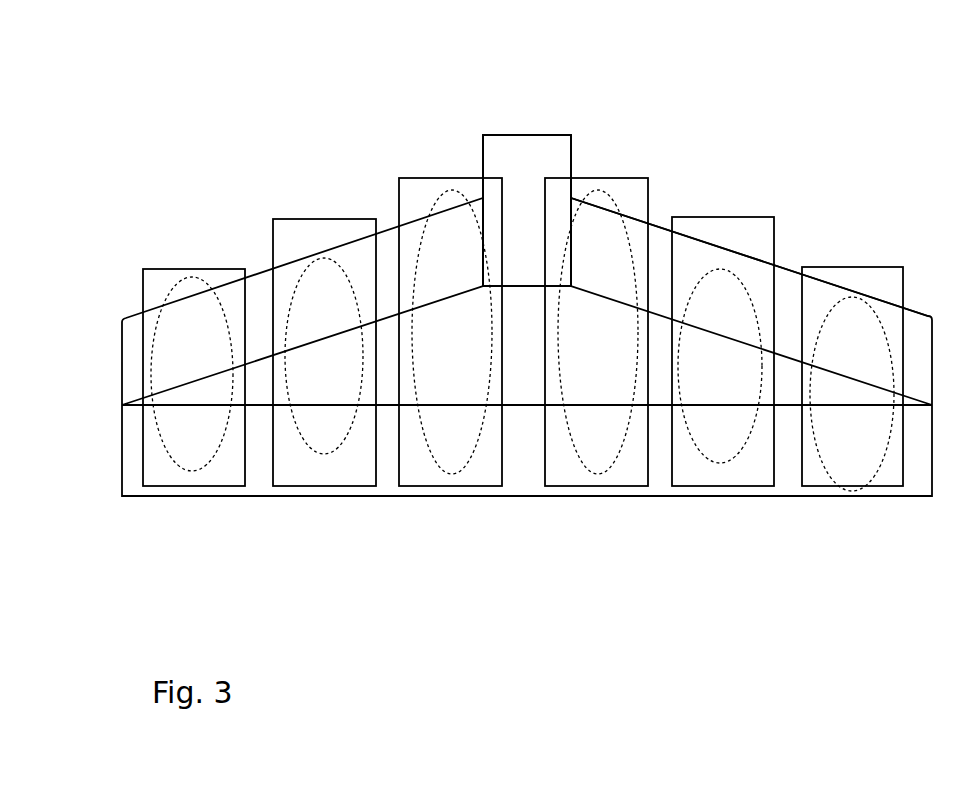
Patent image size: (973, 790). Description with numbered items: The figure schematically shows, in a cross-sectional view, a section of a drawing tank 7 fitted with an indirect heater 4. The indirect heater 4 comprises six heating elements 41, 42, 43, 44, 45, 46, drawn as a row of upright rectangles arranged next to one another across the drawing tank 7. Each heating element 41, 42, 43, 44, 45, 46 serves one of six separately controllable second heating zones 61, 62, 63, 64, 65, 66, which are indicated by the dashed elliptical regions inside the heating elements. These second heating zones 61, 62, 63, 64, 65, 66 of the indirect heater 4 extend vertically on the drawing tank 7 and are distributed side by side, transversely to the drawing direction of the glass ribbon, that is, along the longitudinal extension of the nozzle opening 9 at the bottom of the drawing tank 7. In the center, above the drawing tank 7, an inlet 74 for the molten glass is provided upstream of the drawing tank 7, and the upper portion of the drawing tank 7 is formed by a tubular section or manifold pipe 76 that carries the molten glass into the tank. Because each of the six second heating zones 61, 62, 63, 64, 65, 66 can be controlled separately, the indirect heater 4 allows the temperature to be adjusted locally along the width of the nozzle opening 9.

The indirect heater 4 is at (773, 184).
The drawing tank 7 is at (135, 252).
The nozzle opening 9 is at (244, 500).
The heating element 41 is at (190, 268).
The heating element 42 is at (300, 218).
The heating element 43 is at (415, 178).
The heating element 44 is at (627, 178).
The heating element 45 is at (730, 217).
The heating element 46 is at (858, 267).
The second heating zone 61 is at (192, 471).
The second heating zone 62 is at (323, 453).
The second heating zone 63 is at (453, 474).
The second heating zone 64 is at (603, 474).
The second heating zone 65 is at (723, 463).
The second heating zone 66 is at (842, 490).
The inlet 74 is at (516, 135).
The manifold pipe 76 is at (783, 262).